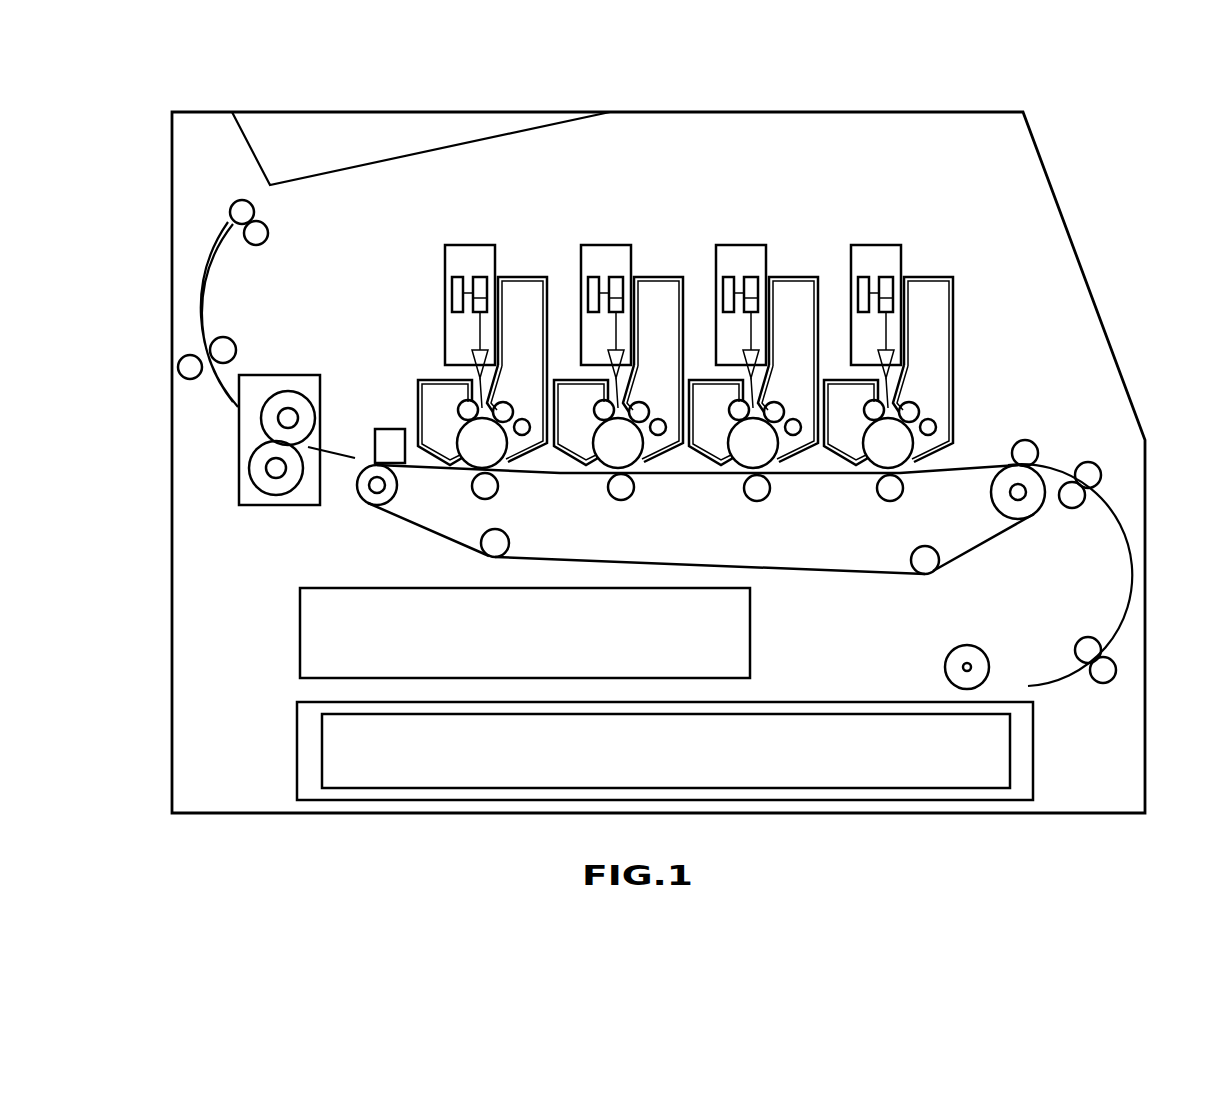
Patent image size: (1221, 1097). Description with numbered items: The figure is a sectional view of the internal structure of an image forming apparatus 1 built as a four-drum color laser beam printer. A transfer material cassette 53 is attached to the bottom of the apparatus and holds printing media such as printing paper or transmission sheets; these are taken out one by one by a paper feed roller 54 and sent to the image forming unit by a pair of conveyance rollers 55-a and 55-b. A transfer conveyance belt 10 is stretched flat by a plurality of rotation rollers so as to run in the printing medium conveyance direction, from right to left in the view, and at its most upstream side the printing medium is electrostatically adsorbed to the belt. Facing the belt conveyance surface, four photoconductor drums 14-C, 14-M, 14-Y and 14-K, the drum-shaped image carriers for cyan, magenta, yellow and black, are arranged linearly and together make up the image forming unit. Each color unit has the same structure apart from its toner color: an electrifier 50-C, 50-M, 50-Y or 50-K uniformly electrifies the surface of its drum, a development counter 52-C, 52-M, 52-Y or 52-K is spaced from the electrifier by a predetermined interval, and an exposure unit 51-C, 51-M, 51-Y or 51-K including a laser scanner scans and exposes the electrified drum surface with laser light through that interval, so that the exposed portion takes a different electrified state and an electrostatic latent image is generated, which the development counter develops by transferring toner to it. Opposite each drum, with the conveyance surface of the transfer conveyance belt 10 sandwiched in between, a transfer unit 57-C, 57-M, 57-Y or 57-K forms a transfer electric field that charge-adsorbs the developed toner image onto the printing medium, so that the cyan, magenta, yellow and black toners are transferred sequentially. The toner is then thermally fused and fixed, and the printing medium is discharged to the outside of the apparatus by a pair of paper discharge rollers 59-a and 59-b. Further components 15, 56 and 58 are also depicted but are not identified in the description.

The image forming apparatus 1 is at (982, 125).
The transfer conveyance belt 10 is at (953, 463).
The photoconductor drum 14-K is at (472, 447).
The photoconductor drum 14-M is at (608, 453).
The photoconductor drum 14-Y is at (747, 453).
The photoconductor drum 14-C is at (880, 453).
The sensor 15 is at (390, 438).
The electrifier 50-K is at (438, 397).
The electrifier 50-M is at (572, 400).
The electrifier 50-Y is at (708, 400).
The electrifier 50-C is at (845, 400).
The exposure unit 51-K is at (464, 258).
The exposure unit 51-M is at (600, 258).
The exposure unit 51-Y is at (735, 258).
The exposure unit 51-C is at (871, 258).
The development counter 52-K is at (518, 290).
The development counter 52-M is at (654, 292).
The development counter 52-Y is at (789, 292).
The development counter 52-C is at (925, 292).
The transfer material cassette 53 is at (790, 730).
The paper feed roller 54 is at (975, 668).
The conveyance roller 55-a is at (1110, 660).
The conveyance roller 55-b is at (1090, 473).
The secondary transfer roller 56 is at (1025, 457).
The transfer unit 57-K is at (485, 492).
The transfer unit 57-M is at (620, 490).
The transfer unit 57-Y is at (752, 492).
The transfer unit 57-C is at (885, 493).
The fixing device 58 is at (250, 480).
The paper discharge roller 59-a is at (185, 378).
The paper discharge roller 59-b is at (270, 217).